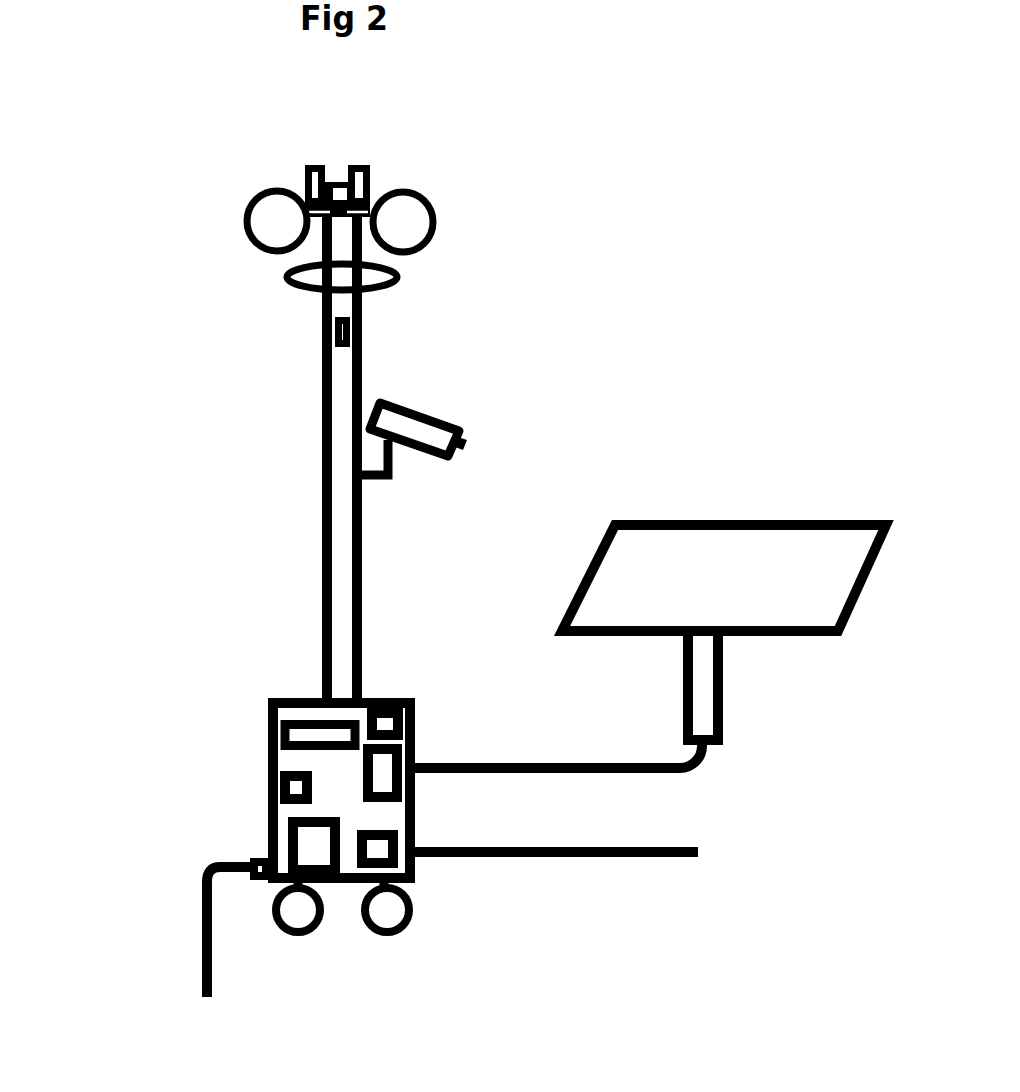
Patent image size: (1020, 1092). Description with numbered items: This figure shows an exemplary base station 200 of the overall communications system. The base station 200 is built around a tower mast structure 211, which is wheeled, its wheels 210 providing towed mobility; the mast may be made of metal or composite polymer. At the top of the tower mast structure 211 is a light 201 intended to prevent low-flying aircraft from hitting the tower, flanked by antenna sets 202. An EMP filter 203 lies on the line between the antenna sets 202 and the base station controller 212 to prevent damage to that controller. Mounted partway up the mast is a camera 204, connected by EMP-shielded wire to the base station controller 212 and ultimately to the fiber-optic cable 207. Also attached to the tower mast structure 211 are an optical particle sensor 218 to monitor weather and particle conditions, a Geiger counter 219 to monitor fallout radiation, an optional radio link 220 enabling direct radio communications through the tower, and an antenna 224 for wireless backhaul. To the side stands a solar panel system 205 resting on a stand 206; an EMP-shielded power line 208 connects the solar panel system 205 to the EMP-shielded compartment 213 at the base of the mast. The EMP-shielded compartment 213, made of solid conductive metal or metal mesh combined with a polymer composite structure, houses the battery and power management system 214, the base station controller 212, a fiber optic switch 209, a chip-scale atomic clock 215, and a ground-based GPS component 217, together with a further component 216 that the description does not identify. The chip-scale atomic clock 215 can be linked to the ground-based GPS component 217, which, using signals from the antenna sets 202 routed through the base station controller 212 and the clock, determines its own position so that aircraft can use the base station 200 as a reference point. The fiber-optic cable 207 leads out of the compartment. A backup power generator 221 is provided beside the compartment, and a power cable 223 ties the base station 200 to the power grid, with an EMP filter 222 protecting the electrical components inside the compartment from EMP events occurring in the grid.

The base station 200 is at (465, 529).
The light 201 is at (335, 158).
The antenna sets 202 is at (417, 275).
The EMP filter 203 is at (368, 332).
The camera 204 is at (455, 408).
The solar panel system 205 is at (741, 505).
The stand 206 is at (735, 696).
The fiber-optic cable 207 is at (690, 877).
The EMP-shielded power line 208 is at (703, 768).
The fiber optic switch 209 is at (382, 853).
The wheels 210 is at (415, 933).
The tower mast structure 211 is at (318, 547).
The base station controller 212 is at (307, 732).
The EMP-shielded compartment 213 is at (265, 708).
The battery and power management system 214 is at (387, 768).
The chip-scale atomic clock 215 is at (283, 788).
The power converter 216 is at (267, 847).
The ground-based GPS component 217 is at (385, 725).
The optical particle sensor 218 is at (385, 165).
The Geiger counter 219 is at (292, 167).
The radio link 220 is at (240, 200).
The backup power generator 221 is at (312, 853).
The EMP filter 222 is at (262, 887).
The power cable 223 is at (188, 990).
The antenna 224 is at (445, 208).